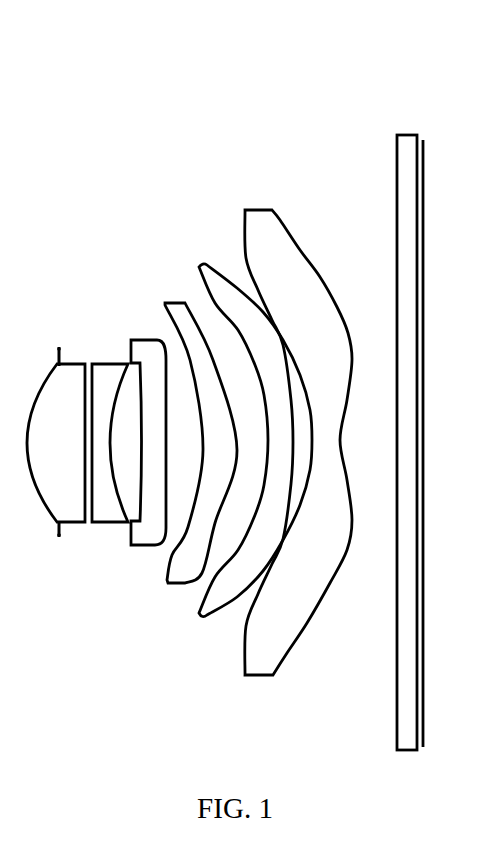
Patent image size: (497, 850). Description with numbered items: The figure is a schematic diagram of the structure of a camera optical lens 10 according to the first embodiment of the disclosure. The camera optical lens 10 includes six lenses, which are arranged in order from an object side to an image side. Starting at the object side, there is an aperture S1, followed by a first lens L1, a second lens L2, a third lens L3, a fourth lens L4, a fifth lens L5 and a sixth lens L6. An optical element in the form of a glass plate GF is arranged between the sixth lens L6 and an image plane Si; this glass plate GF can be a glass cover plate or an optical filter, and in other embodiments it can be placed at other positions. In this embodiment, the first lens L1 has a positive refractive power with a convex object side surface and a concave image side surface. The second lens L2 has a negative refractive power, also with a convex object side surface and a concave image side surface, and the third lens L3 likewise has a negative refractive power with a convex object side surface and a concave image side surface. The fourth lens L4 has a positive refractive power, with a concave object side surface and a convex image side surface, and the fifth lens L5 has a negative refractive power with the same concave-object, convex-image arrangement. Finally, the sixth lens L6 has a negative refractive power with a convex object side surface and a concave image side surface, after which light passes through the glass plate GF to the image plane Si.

The camera optical lens 10 is at (240, 50).
The aperture S1 is at (41, 436).
The first lens L1 is at (56, 420).
The second lens L2 is at (110, 420).
The third lens L3 is at (148, 422).
The fourth lens L4 is at (200, 422).
The fifth lens L5 is at (255, 421).
The sixth lens L6 is at (298, 421).
The glass plate GF is at (406, 421).
The image plane Si is at (432, 426).